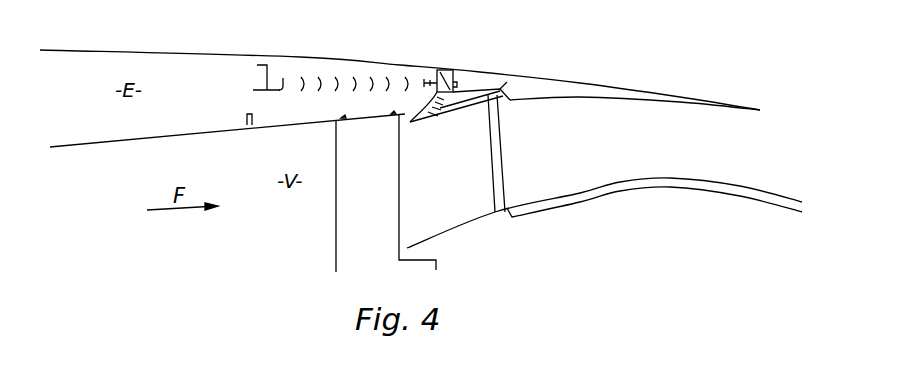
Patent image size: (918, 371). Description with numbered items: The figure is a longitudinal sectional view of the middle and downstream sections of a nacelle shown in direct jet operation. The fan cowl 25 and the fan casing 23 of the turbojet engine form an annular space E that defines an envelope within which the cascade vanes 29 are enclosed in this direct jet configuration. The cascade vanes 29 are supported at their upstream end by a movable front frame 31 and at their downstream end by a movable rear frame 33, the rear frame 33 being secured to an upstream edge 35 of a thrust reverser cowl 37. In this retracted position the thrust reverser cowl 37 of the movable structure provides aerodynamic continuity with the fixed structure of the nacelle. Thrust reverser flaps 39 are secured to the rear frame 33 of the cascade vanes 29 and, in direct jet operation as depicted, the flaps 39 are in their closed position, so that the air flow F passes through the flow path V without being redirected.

The fan casing 23 is at (97, 147).
The fan cowl 25 is at (117, 50).
The cascade vanes 29 is at (362, 78).
The movable front frame 31 is at (258, 62).
The movable rear frame 33 is at (447, 72).
The upstream edge 35 is at (481, 73).
The thrust reverser cowl 37 is at (518, 77).
The thrust reverser flaps 39 is at (467, 108).